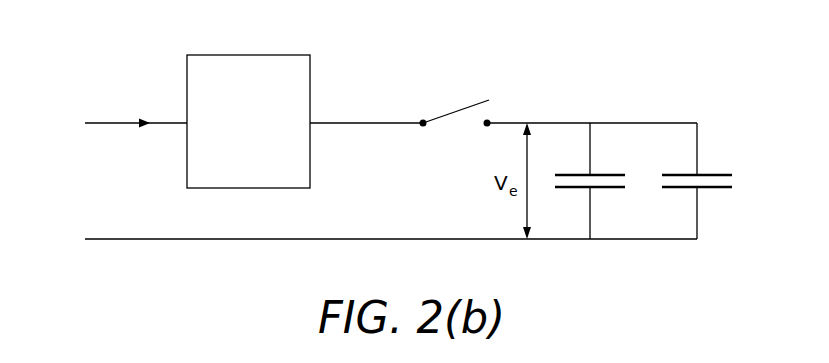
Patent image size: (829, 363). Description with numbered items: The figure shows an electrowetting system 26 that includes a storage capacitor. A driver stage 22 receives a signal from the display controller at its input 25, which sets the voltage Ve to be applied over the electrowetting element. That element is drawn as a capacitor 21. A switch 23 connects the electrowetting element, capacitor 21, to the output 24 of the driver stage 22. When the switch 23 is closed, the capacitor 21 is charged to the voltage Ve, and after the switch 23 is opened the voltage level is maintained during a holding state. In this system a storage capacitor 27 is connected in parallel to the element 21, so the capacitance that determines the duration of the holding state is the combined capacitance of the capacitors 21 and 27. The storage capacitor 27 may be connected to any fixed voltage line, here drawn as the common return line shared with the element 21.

The capacitor 21 is at (603, 188).
The driver stage 22 is at (187, 55).
The switch 23 is at (457, 112).
The output 24 is at (332, 122).
The input 25 is at (107, 122).
The electrowetting system 26 is at (635, 160).
The storage capacitor 27 is at (717, 188).